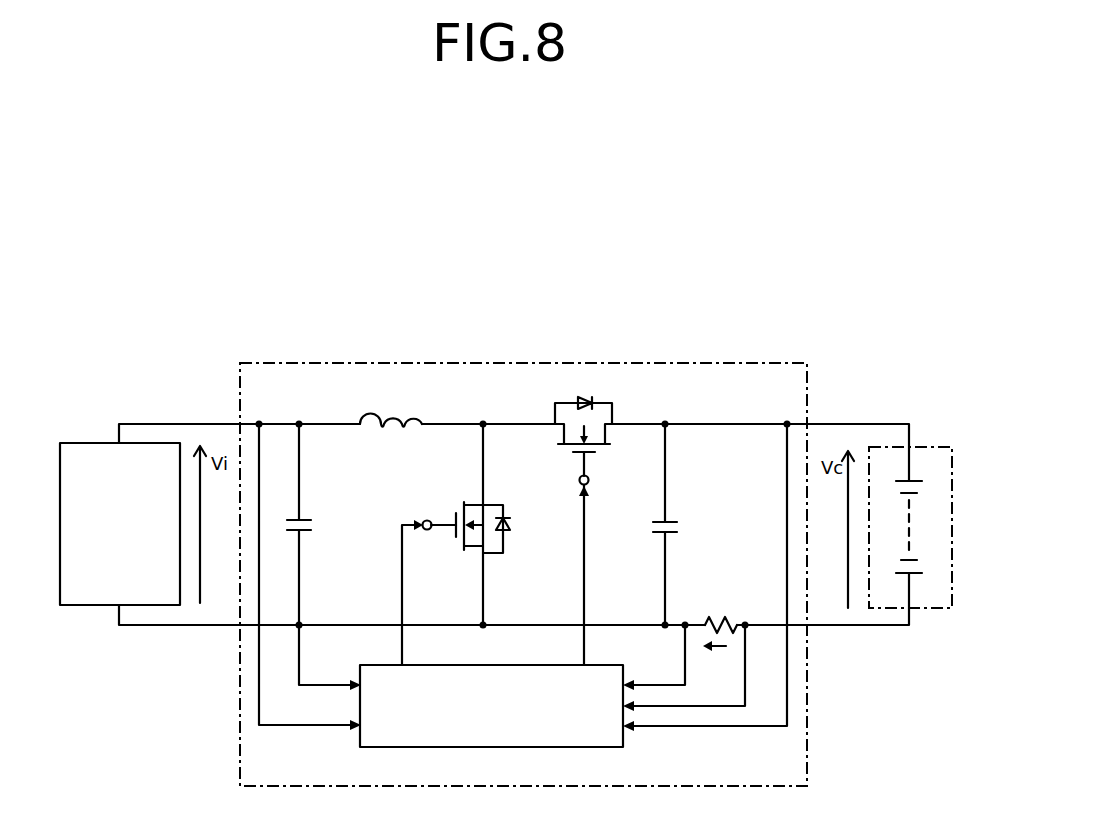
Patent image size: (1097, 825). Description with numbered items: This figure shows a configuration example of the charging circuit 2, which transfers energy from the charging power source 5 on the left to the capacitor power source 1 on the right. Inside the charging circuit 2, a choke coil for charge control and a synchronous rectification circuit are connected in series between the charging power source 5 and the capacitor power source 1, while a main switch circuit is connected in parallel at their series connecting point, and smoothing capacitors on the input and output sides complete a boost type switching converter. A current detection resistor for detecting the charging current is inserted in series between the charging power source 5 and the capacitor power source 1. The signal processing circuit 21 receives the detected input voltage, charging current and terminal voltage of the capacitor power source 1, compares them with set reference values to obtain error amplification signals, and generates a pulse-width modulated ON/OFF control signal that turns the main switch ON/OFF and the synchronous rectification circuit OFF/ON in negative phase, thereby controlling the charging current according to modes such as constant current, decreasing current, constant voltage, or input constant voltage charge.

The capacitor power source 1 is at (928, 447).
The charging circuit 2 is at (300, 363).
The charging power source 5 is at (100, 440).
The signal processing circuit 21 is at (443, 747).